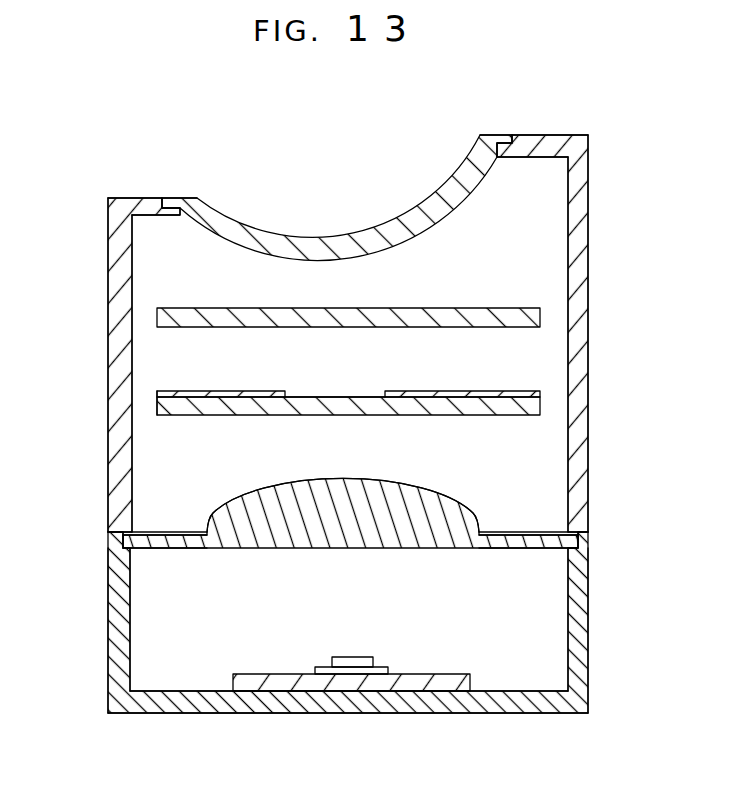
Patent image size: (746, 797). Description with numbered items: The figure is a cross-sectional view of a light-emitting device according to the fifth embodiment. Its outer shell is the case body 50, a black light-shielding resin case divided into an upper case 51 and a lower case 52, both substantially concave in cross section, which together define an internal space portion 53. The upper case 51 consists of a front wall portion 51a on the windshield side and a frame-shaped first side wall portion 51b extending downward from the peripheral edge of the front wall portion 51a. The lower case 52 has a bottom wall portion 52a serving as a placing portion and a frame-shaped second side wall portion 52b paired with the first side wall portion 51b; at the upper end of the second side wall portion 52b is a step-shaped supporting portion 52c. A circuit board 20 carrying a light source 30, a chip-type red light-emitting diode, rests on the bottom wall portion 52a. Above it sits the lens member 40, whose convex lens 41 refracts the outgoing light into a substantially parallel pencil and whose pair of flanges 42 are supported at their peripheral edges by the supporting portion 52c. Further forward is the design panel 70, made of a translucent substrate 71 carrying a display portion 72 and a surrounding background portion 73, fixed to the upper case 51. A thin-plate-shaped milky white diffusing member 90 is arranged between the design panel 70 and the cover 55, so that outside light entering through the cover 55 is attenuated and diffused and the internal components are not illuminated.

The circuit board 20 is at (453, 686).
The light source 30 is at (342, 660).
The lens member 40 is at (417, 487).
The convex lens 41 is at (292, 495).
The flanges 42 is at (163, 541).
The case body 50 is at (600, 292).
The upper case 51 is at (345, 307).
The front wall portion 51a is at (148, 207).
The first side wall portion 51b is at (122, 315).
The lower case 52 is at (349, 653).
The bottom wall portion 52a is at (279, 702).
The second side wall portion 52b is at (125, 645).
The supporting portion 52c is at (115, 550).
The space portion 53 is at (157, 410).
The cover 55 is at (392, 236).
The design panel 70 is at (493, 420).
The substrate 71 is at (235, 409).
The display portion 72 is at (350, 387).
The background portion 73 is at (197, 394).
The diffusing member 90 is at (243, 318).